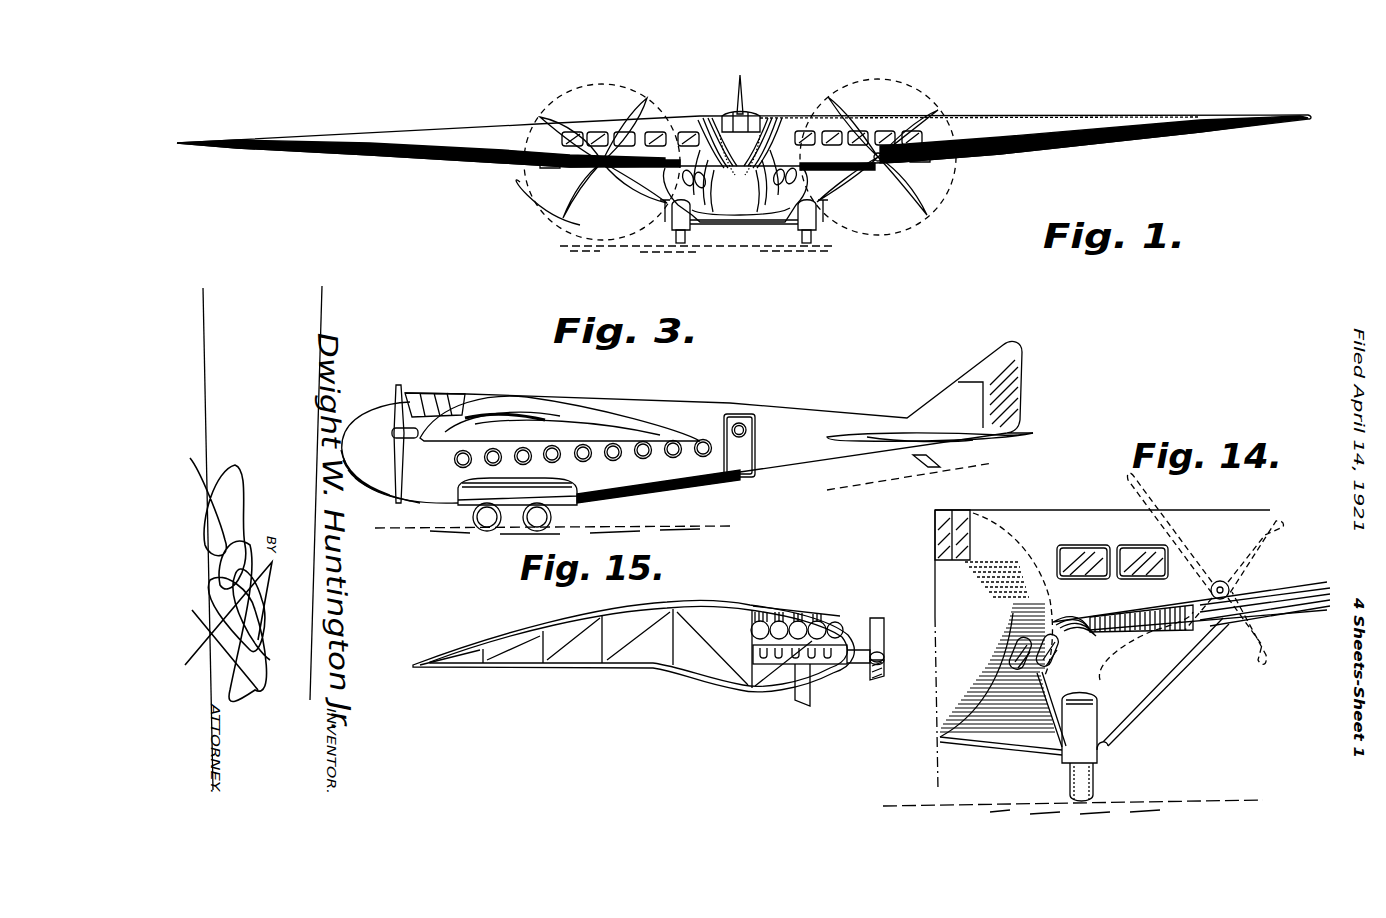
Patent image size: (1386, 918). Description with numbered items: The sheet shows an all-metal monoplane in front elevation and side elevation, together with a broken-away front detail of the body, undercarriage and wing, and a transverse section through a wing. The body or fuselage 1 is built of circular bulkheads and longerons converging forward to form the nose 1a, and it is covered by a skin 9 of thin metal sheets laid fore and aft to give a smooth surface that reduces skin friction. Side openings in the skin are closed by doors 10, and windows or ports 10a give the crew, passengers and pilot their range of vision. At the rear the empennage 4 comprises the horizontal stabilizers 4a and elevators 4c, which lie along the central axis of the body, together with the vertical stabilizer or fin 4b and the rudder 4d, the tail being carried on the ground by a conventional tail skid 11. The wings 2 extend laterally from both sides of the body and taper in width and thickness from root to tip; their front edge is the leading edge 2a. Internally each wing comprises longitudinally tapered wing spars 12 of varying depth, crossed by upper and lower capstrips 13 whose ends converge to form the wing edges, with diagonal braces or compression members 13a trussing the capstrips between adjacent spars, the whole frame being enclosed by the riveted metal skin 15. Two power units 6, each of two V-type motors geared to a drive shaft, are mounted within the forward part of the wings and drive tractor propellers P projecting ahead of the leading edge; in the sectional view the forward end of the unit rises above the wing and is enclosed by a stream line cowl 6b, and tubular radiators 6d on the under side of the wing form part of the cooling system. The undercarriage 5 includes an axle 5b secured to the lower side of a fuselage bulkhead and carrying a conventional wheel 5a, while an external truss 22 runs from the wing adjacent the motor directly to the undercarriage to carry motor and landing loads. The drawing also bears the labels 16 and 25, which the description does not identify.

In FIG. 1, the body or fuselage 1 is at (770, 122).
In FIG. 3, the body or fuselage 1 is at (570, 392).
In FIG. 14, the body or fuselage 1 is at (932, 583).
In FIG. 3, the nose 1a is at (350, 425).
In FIG. 1, the wings 2 is at (457, 133).
In FIG. 3, the wings 2 is at (505, 409).
In FIG. 14, the wings 2 is at (1208, 515).
In FIG. 1, the leading edge 2a is at (482, 160).
In FIG. 14, the leading edge 2a is at (1295, 604).
In FIG. 1, the empennage 4 is at (744, 96).
In FIG. 3, the empennage 4 is at (1022, 391).
In FIG. 3, the horizontal stabilizers 4a is at (870, 432).
In FIG. 3, the vertical stabilizer or fin 4b is at (936, 405).
In FIG. 3, the elevators 4c is at (1015, 434).
In FIG. 3, the rudder 4d is at (1003, 372).
In FIG. 1, the undercarriage 5 is at (697, 226).
In FIG. 3, the undercarriage 5 is at (684, 498).
In FIG. 14, the undercarriage 5 is at (1073, 754).
In FIG. 14, the wheel 5a is at (1068, 782).
In FIG. 14, the axle 5b is at (1013, 748).
In FIG. 1, the power units 6 is at (604, 158).
In FIG. 15, the power units 6 is at (853, 622).
In FIG. 15, the stream line cowl 6b is at (830, 612).
In FIG. 14, the tubular radiators 6d is at (1146, 646).
In FIG. 3, the skin or covering 9 is at (671, 418).
In FIG. 14, the skin or covering 9 is at (1012, 594).
In FIG. 3, the doors 10 is at (740, 472).
In FIG. 1, the windows or ports 10a is at (658, 130).
In FIG. 3, the windows or ports 10a is at (455, 382).
In FIG. 14, the windows or ports 10a is at (1087, 550).
In FIG. 3, the tail skid 11 is at (934, 468).
In FIG. 15, the wing spars 12 is at (672, 650).
In FIG. 15, the capstrips 13 is at (690, 603).
In FIG. 15, the braces or compression members 13a is at (720, 648).
In FIG. 1, the skin or covering 15 is at (806, 136).
In FIG. 14, the skin or covering 15 is at (1165, 584).
In FIG. 3, the elevator hinge 16 is at (997, 441).
In FIG. 14, the external truss 22 is at (1135, 714).
In FIG. 1, the wing flap / trailing edge 25 is at (532, 195).
In FIG. 1, the tractor propeller P is at (566, 216).
In FIG. 15, the tractor propeller P is at (876, 680).
In FIG. 14, the tractor propeller P is at (1262, 655).